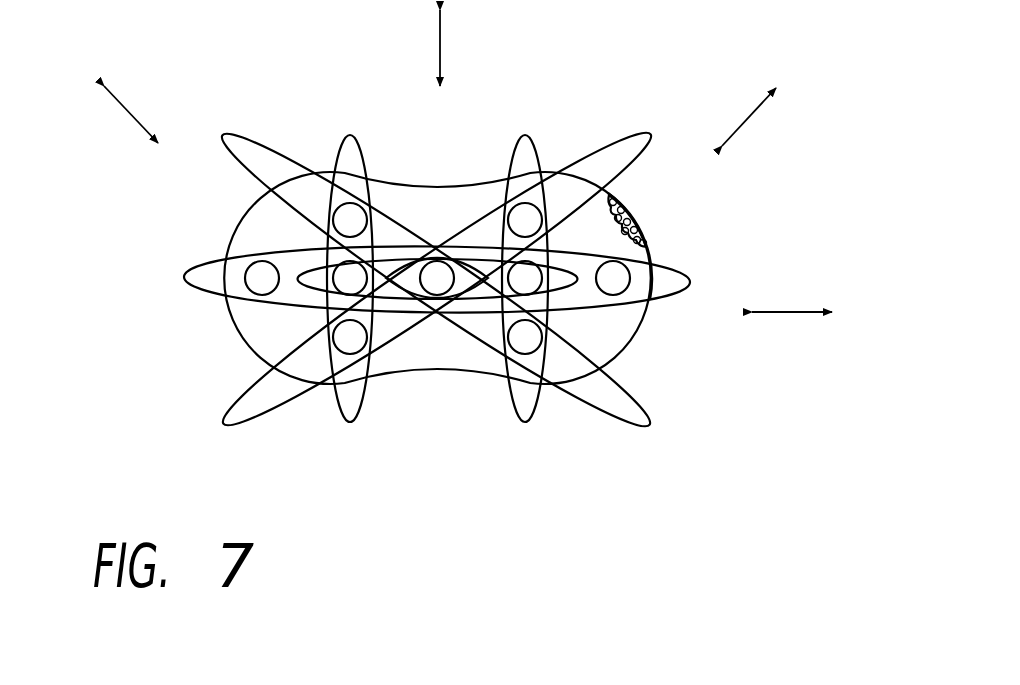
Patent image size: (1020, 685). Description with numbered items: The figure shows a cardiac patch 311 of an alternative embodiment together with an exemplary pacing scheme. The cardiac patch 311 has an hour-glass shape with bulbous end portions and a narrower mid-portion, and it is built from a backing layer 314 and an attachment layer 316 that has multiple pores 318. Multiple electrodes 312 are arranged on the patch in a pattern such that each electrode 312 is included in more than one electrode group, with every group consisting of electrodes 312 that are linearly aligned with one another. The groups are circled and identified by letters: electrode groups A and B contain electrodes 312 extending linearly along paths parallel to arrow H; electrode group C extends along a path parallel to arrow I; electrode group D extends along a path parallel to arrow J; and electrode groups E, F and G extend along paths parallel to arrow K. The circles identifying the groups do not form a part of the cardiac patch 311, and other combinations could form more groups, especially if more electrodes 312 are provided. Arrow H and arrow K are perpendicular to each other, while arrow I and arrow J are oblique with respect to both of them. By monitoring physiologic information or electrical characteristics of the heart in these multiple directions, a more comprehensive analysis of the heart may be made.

The cardiac patch 311 is at (612, 347).
The electrode 312 is at (615, 283).
The backing layer 314 is at (645, 254).
The attachment layer 316 is at (624, 200).
The pores 318 is at (640, 233).
The electrode group A is at (352, 134).
The electrode group B is at (524, 136).
The electrode group C is at (250, 136).
The electrode group D is at (650, 137).
The electrode group E is at (187, 278).
The electrode group F is at (690, 282).
The electrode group G is at (263, 258).
The arrow H is at (440, 46).
The arrow I is at (128, 115).
The arrow J is at (752, 115).
The arrow K is at (793, 312).